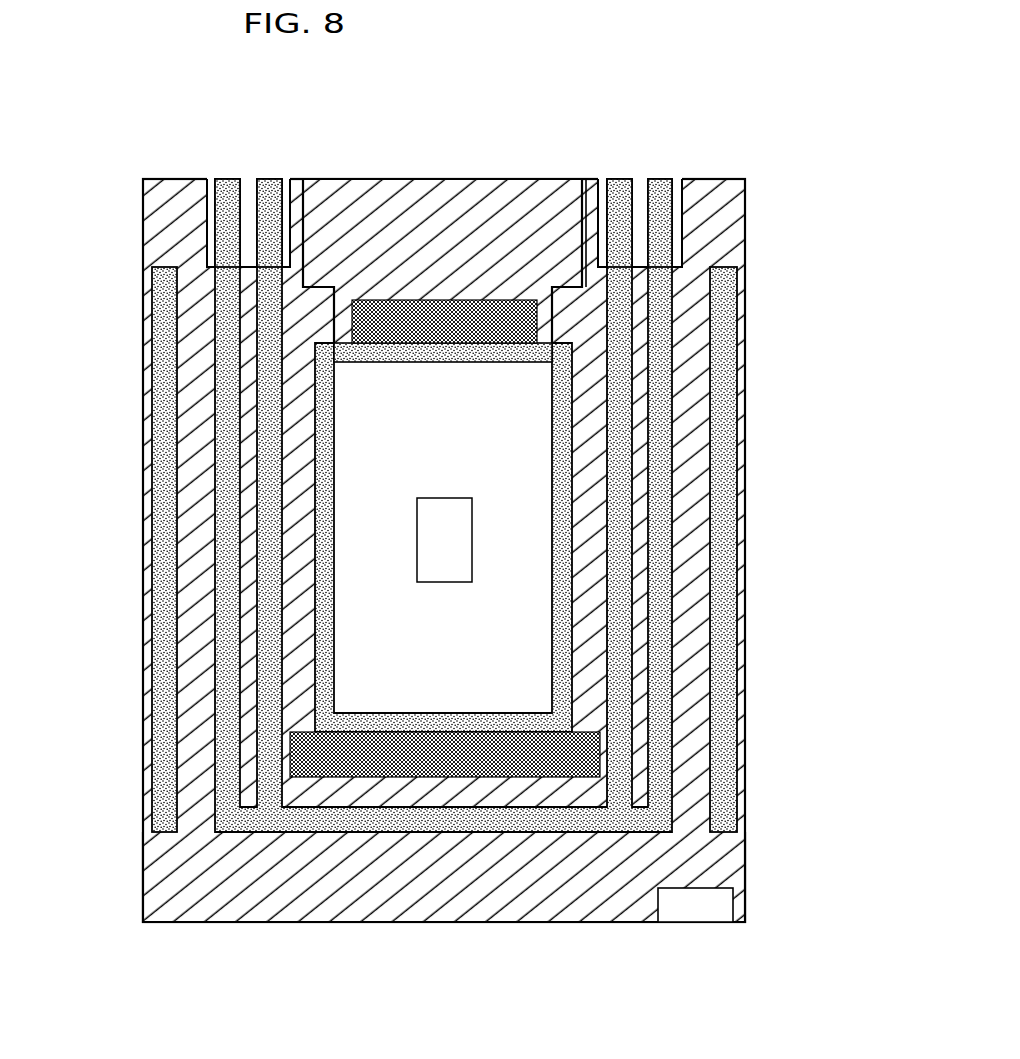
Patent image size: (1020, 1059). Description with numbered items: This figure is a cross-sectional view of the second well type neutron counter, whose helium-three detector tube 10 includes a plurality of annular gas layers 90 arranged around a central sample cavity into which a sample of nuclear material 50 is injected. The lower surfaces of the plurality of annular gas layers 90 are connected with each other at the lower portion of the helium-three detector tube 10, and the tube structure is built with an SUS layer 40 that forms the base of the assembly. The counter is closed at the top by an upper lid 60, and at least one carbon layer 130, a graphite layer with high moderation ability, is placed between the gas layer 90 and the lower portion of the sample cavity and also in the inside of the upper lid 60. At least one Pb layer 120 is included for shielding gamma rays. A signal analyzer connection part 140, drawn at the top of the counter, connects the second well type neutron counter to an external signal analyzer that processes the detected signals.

The He-3 detector tube 10 is at (592, 690).
The SUS layer 40 is at (727, 900).
The sample of nuclear material 50 is at (429, 538).
The upper lid 60 is at (356, 197).
The annular gas layer 90 is at (617, 452).
The Pb layer 120 is at (718, 350).
The carbon layer 130 is at (447, 313).
The signal analyzer connection part 140 is at (224, 188).